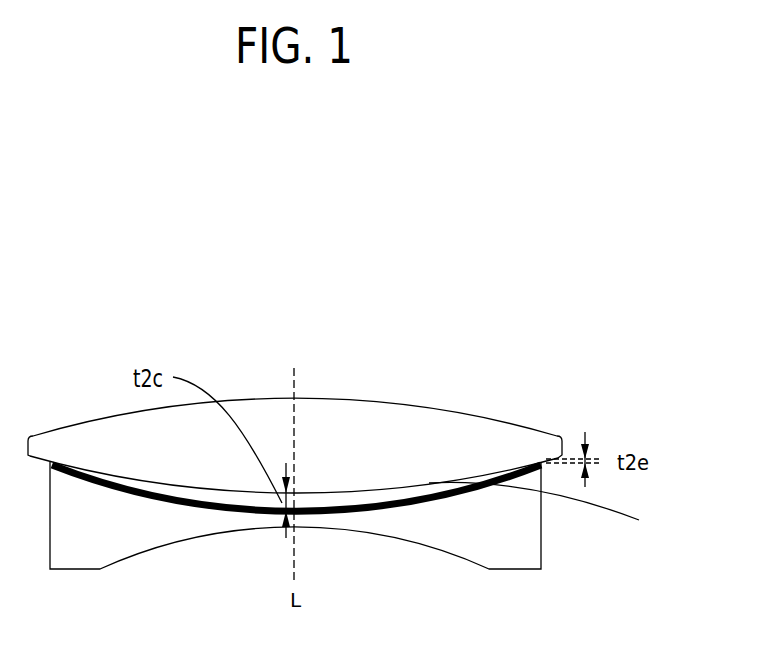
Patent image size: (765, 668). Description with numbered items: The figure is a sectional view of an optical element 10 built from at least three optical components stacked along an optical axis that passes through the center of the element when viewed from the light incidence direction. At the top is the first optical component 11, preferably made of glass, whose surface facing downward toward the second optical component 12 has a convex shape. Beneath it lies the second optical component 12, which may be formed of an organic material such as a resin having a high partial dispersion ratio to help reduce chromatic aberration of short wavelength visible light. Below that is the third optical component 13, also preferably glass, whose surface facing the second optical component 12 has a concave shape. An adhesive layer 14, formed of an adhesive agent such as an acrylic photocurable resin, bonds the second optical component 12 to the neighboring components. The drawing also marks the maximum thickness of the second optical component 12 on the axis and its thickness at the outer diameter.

The optical element 10 is at (310, 286).
The first optical component 11 is at (443, 428).
The second optical component 12 is at (448, 492).
The third optical component 13 is at (428, 518).
The adhesive layer 14 is at (359, 498).